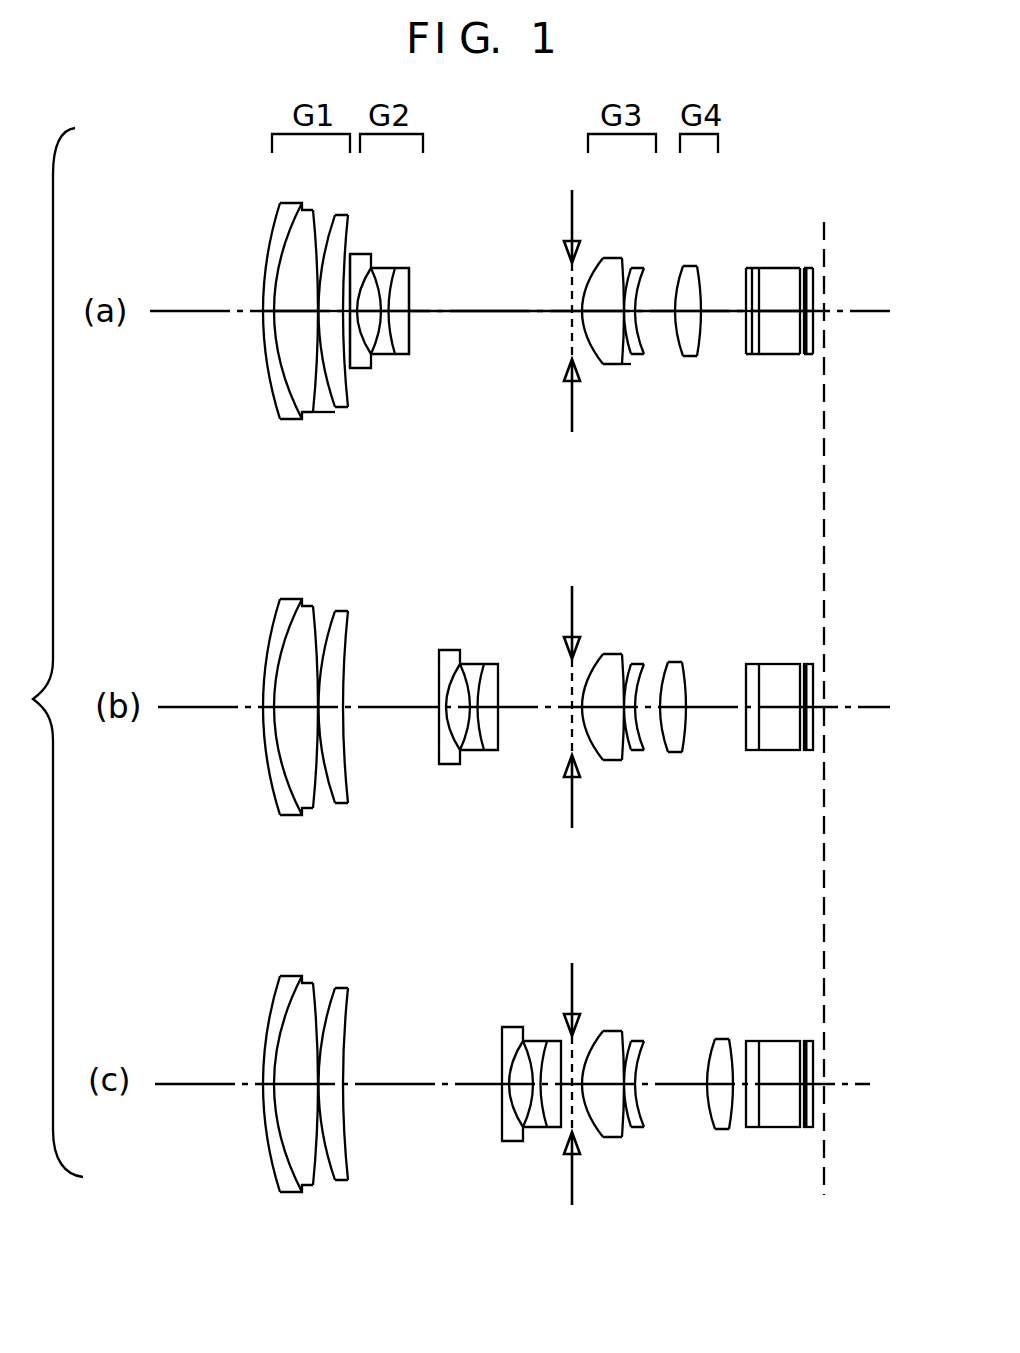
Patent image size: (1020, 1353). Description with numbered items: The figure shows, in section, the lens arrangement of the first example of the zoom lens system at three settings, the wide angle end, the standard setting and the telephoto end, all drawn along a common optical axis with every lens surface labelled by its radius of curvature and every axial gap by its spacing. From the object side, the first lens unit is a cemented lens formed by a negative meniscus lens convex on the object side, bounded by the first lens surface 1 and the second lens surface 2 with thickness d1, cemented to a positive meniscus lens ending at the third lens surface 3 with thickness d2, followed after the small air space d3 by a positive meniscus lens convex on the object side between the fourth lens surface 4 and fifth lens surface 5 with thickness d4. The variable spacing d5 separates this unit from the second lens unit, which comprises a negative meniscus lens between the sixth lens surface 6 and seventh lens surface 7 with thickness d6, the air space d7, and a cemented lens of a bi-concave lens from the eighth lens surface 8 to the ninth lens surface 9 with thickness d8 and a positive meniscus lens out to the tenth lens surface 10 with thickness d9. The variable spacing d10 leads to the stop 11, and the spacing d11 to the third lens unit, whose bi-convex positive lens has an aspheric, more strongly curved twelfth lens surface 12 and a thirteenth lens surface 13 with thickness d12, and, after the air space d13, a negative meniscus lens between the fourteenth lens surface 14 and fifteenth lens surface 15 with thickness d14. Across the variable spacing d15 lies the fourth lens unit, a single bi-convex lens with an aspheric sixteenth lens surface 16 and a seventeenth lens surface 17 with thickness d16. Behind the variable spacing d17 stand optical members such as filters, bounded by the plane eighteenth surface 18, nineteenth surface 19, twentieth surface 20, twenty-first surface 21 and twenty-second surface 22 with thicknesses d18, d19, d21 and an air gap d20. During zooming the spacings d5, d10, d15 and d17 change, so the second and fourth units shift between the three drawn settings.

The first lens surface 1 is at (273, 222).
The second lens surface 2 is at (291, 201).
The third lens surface 3 is at (313, 212).
The fourth lens surface 4 is at (334, 215).
The fifth lens surface 5 is at (350, 255).
The sixth lens surface 6 is at (364, 266).
The seventh lens surface 7 is at (381, 270).
The eighth lens surface 8 is at (392, 270).
The ninth lens surface 9 is at (406, 275).
The tenth lens surface 10 is at (411, 285).
The stop 11 is at (568, 277).
The twelfth lens surface 12 is at (602, 259).
The thirteenth lens surface 13 is at (622, 259).
The fourteenth lens surface 14 is at (633, 268).
The fifteenth lens surface 15 is at (644, 268).
The sixteenth lens surface 16 is at (683, 266).
The seventeenth lens surface 17 is at (698, 266).
The eighteenth surface 18 is at (746, 268).
The nineteenth surface 19 is at (759, 268).
The twentieth surface 20 is at (800, 268).
The twenty-first surface 21 is at (806, 268).
The twenty-second surface 22 is at (825, 274).
The first lens spacing d1 is at (263, 357).
The second lens spacing d2 is at (289, 419).
The third lens spacing d3 is at (315, 357).
The fourth lens spacing d4 is at (344, 390).
The fifth lens spacing d5 is at (356, 368).
The sixth lens spacing d6 is at (366, 358).
The seventh lens spacing d7 is at (385, 357).
The eighth lens spacing d8 is at (396, 355).
The ninth lens spacing d9 is at (410, 350).
The tenth lens spacing d10 is at (498, 316).
The eleventh lens spacing d11 is at (574, 365).
The twelfth lens spacing d12 is at (607, 366).
The thirteenth lens spacing d13 is at (626, 362).
The fourteenth lens spacing d14 is at (640, 356).
The fifteenth lens spacing d15 is at (662, 335).
The sixteenth lens spacing d16 is at (691, 358).
The seventeenth lens spacing d17 is at (722, 318).
The eighteenth lens spacing d18 is at (755, 354).
The nineteenth lens spacing d19 is at (780, 354).
The twentieth lens spacing d20 is at (805, 354).
The twenty-first lens spacing d21 is at (815, 337).